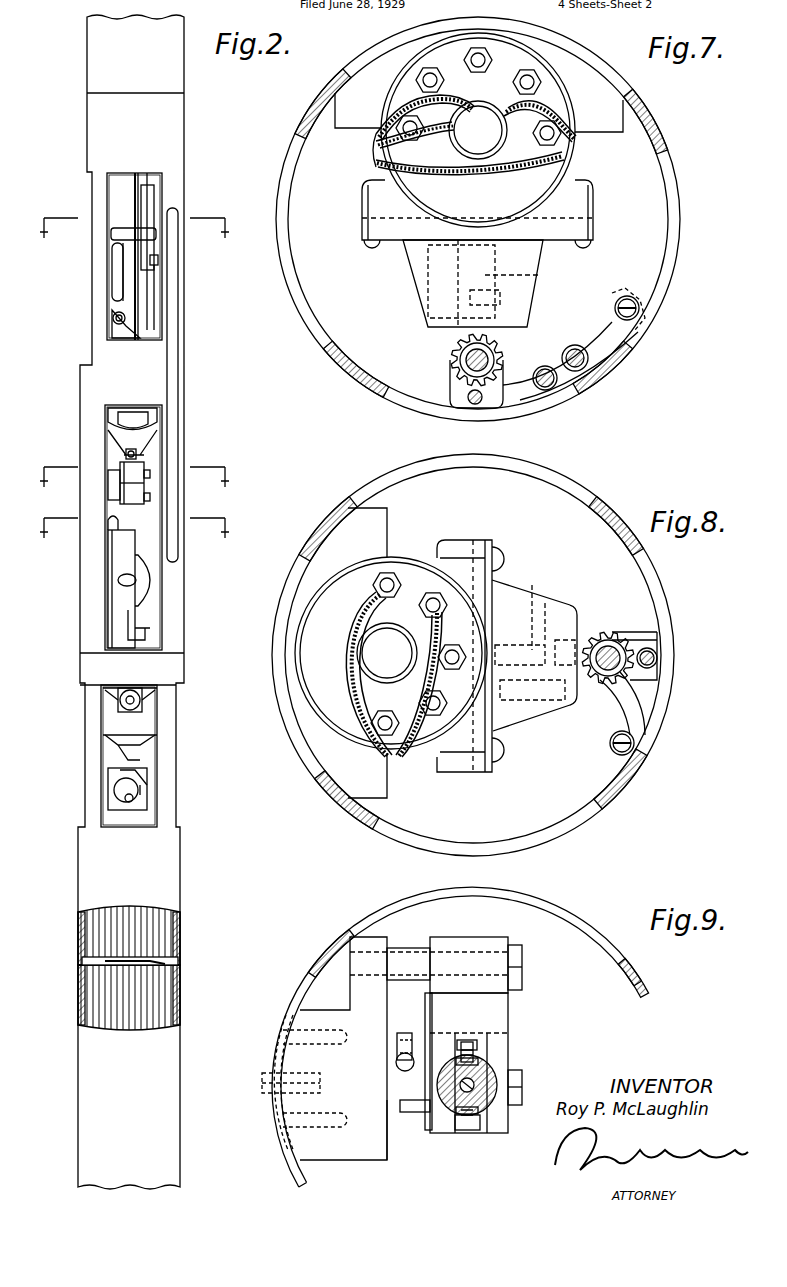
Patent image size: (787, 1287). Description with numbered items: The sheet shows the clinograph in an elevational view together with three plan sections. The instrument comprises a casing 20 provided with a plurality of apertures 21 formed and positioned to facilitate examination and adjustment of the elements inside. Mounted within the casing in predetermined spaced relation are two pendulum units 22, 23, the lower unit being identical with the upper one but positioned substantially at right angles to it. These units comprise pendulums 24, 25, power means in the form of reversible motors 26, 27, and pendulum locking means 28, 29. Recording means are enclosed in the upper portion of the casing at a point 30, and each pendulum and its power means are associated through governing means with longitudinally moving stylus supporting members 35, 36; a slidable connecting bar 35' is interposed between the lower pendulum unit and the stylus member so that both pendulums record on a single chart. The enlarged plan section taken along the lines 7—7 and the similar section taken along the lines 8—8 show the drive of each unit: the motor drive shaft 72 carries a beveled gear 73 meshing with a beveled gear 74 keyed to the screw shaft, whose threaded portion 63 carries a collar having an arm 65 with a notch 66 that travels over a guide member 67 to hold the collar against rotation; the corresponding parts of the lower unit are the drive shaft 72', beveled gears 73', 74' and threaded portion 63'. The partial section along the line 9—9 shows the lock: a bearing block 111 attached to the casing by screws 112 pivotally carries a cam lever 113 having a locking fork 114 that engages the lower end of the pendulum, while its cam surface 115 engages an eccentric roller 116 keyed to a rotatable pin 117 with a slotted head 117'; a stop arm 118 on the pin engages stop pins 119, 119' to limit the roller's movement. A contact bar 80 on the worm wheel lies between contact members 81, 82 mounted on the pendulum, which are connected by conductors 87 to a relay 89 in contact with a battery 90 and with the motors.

In FIG. 2, the section line 7- 7 is at (133, 244).
In FIG. 2, the section line 8- 8 is at (132, 538).
In FIG. 2, the section line 9- 9 is at (132, 484).
In FIG. 2, the casing 20 is at (78, 848).
In FIG. 7, the casing 20 is at (333, 355).
In FIG. 8, the casing 20 is at (318, 532).
In FIG. 9, the casing 20 is at (320, 960).
In FIG. 2, the apertures 21 is at (70, 795).
In FIG. 7, the apertures 21 is at (392, 42).
In FIG. 8, the apertures 21 is at (375, 482).
In FIG. 9, the apertures 21 is at (388, 908).
In FIG. 2, the pendulum unit 22 is at (166, 700).
In FIG. 2, the pendulum unit 23 is at (163, 412).
In FIG. 2, the pendulum 24 is at (118, 722).
In FIG. 2, the pendulum 25 is at (120, 437).
In FIG. 2, the motor 26 is at (120, 590).
In FIG. 8, the motor 26 is at (328, 652).
In FIG. 2, the motor 27 is at (123, 280).
In FIG. 7, the motor 27 is at (560, 98).
In FIG. 2, the pendulum locking means 28 is at (135, 795).
In FIG. 2, the pendulum locking means 29 is at (135, 485).
In FIG. 9, the pendulum locking means 29 is at (520, 1030).
In FIG. 2, the recording means location 30 is at (176, 80).
In FIG. 2, the stylus supporting member 35 is at (171, 251).
In FIG. 7, the stylus supporting member 35 is at (572, 343).
In FIG. 2, the slidable connecting bar 35' is at (196, 385).
In FIG. 7, the slidable connecting bar 35' is at (653, 313).
In FIG. 8, the slidable connecting bar 35' is at (647, 721).
In FIG. 2, the stylus supporting member 36 is at (150, 200).
In FIG. 7, the stylus supporting member 36 is at (545, 366).
In FIG. 7, the threaded portion 63 is at (453, 360).
In FIG. 8, the threaded portion 63' is at (608, 635).
In FIG. 7, the arm 65 is at (535, 392).
In FIG. 7, the notch 66 is at (473, 408).
In FIG. 7, the guide member 67 is at (483, 402).
In FIG. 7, the drive shaft 72 is at (479, 210).
In FIG. 8, the drive shaft 72' is at (462, 653).
In FIG. 7, the beveled gear 73 is at (458, 357).
In FIG. 8, the beveled gear 73' is at (577, 712).
In FIG. 7, the beveled gear 74 is at (489, 381).
In FIG. 8, the beveled gear 74' is at (619, 671).
In FIG. 9, the contact bar 80 is at (490, 1080).
In FIG. 9, the contact member 81 is at (462, 1131).
In FIG. 9, the contact member 82 is at (467, 1042).
In FIG. 9, the conductor 87 is at (485, 1060).
In FIG. 2, the relay 89 is at (153, 933).
In FIG. 2, the battery 90 is at (157, 986).
In FIG. 9, the bearing block 111 is at (327, 1017).
In FIG. 9, the screws 112 is at (280, 1036).
In FIG. 9, the cam lever 113 is at (428, 1002).
In FIG. 9, the locking fork 114 is at (495, 1033).
In FIG. 9, the cam surface 115 is at (427, 1110).
In FIG. 9, the eccentric roller 116 is at (426, 1045).
In FIG. 9, the rotatable pin 117 is at (274, 1084).
In FIG. 9, the slotted head 117' is at (274, 1098).
In FIG. 9, the stop arm 118 is at (398, 1038).
In FIG. 9, the stop pin 119 is at (365, 1141).
In FIG. 9, the stop pin 119' is at (385, 1060).